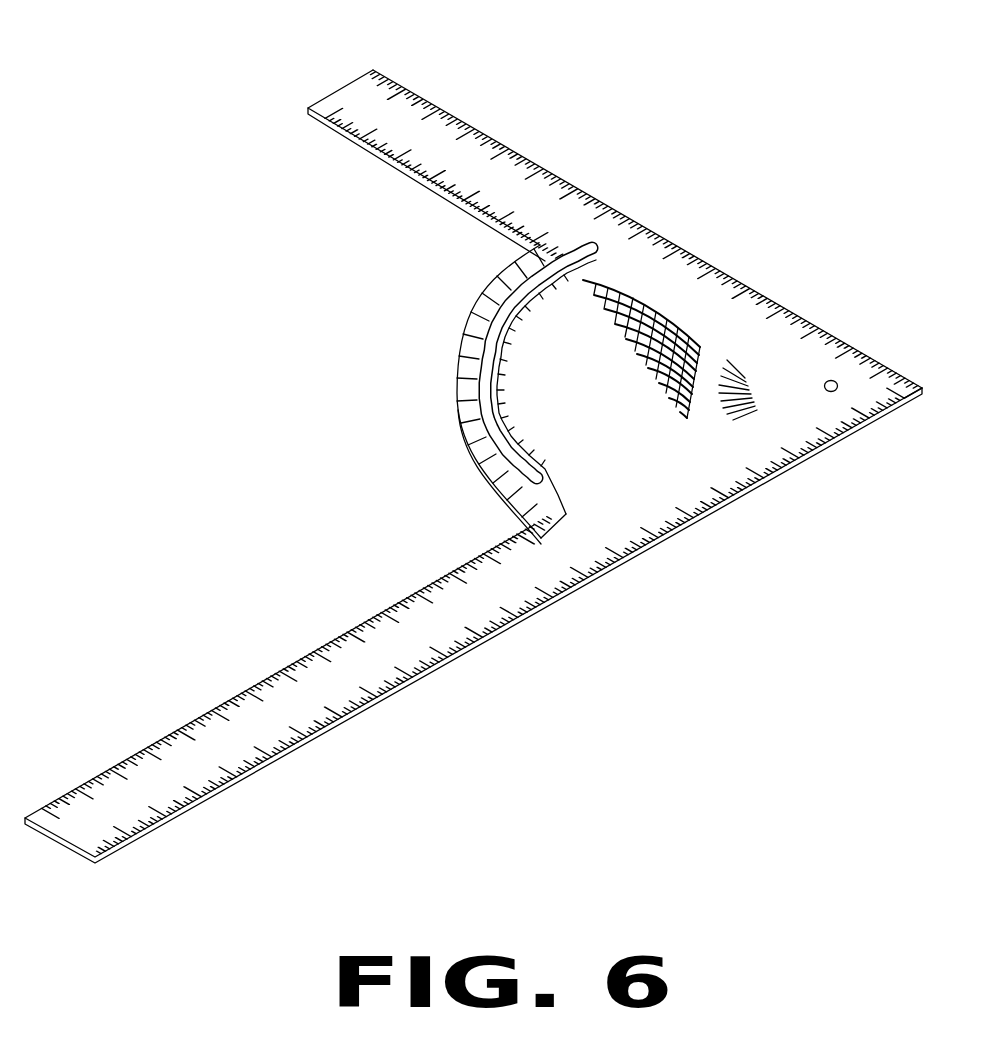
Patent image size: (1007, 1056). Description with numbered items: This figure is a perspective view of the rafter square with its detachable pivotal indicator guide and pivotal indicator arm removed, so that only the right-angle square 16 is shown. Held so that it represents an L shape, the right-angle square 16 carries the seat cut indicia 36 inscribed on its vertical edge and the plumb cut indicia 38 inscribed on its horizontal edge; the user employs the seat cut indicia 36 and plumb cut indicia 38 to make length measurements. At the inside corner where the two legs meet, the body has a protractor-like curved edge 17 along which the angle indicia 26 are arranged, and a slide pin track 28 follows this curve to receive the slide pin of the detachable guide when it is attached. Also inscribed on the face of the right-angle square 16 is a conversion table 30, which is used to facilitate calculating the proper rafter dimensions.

The right-angle square 16 is at (517, 595).
The protractor-like curved edge 17 is at (500, 485).
The angle indicia 26 is at (473, 445).
The slide pin track 28 is at (497, 392).
The conversion table 30 is at (685, 413).
The seat cut indicia 36 is at (210, 790).
The plumb cut indicia 38 is at (427, 135).